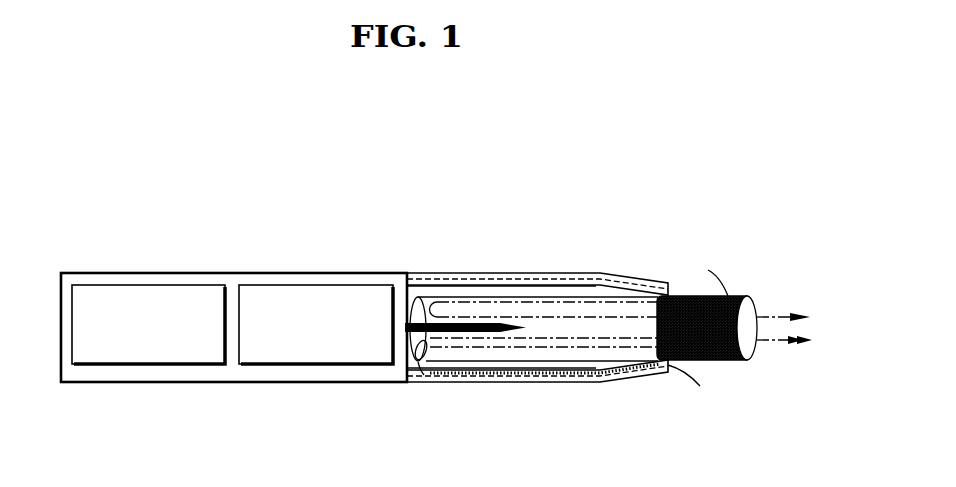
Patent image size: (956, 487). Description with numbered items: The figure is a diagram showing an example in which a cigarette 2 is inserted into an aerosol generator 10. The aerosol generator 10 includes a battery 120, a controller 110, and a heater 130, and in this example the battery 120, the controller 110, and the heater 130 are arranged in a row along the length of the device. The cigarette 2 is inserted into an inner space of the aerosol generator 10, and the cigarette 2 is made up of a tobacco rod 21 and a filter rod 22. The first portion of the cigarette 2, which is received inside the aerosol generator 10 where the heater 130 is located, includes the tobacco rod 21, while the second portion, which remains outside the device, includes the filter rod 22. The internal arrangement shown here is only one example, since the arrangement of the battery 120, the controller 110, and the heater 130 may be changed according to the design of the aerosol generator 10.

The aerosol generator 10 is at (626, 181).
The controller 110 is at (329, 285).
The battery 120 is at (157, 285).
The heater 130 is at (463, 322).
The cigarette 2 is at (611, 338).
The tobacco rod 21 is at (553, 296).
The filter rod 22 is at (740, 296).